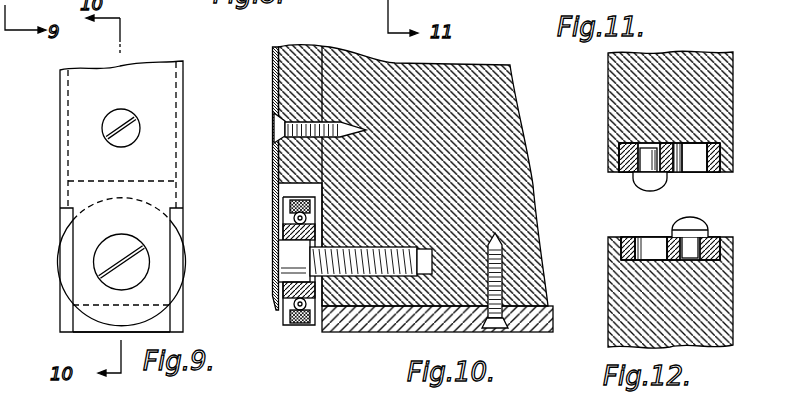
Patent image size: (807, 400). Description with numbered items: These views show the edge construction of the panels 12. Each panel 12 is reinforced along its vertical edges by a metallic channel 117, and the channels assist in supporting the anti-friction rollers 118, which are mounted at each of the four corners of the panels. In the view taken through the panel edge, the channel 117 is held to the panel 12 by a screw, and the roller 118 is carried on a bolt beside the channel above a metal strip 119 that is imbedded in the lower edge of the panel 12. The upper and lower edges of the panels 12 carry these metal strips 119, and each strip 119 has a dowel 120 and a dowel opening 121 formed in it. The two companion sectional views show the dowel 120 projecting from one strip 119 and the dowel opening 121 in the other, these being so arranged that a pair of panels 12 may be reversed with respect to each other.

In FIG. 9, the panel 12 is at (183, 222).
In FIG. 10, the panel 12 is at (508, 138).
In FIG. 11, the panel 12 is at (716, 104).
In FIG. 12, the panel 12 is at (623, 294).
In FIG. 9, the metallic channel 117 is at (163, 148).
In FIG. 10, the metallic channel 117 is at (272, 80).
In FIG. 9, the anti-friction roller 118 is at (72, 285).
In FIG. 10, the anti-friction roller 118 is at (300, 328).
In FIG. 9, the metal strip 119 is at (157, 325).
In FIG. 10, the metal strip 119 is at (350, 322).
In FIG. 11, the metal strip 119 is at (716, 160).
In FIG. 12, the metal strip 119 is at (623, 248).
In FIG. 11, the dowel 120 is at (648, 184).
In FIG. 12, the dowel 120 is at (697, 230).
In FIG. 11, the dowel opening 121 is at (695, 164).
In FIG. 12, the dowel opening 121 is at (651, 240).